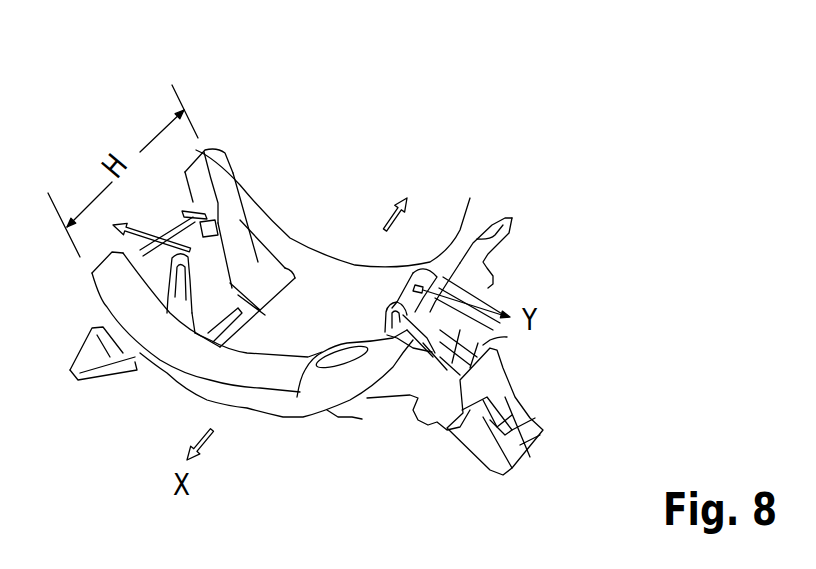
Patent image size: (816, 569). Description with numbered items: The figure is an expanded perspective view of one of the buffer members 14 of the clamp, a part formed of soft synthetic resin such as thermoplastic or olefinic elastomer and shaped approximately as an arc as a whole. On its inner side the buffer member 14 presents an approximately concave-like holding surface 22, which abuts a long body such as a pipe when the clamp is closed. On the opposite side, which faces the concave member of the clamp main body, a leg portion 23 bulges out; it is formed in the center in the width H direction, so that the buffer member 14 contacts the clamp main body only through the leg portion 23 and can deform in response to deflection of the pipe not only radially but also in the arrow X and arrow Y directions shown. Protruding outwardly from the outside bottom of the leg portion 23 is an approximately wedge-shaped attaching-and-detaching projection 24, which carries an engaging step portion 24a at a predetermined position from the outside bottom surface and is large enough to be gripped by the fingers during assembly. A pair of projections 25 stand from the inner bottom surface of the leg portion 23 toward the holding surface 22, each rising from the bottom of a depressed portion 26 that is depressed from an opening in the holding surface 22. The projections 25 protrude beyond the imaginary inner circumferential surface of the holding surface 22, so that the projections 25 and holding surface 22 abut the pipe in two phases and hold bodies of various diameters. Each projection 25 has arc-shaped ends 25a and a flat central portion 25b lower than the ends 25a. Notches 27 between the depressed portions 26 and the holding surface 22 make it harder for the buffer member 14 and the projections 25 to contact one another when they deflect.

The buffer member 14 is at (385, 64).
The holding surface 22 is at (317, 292).
The leg portion 23 is at (368, 402).
The attaching-and-detaching projection 24 is at (72, 380).
The engaging step portion 24a is at (507, 337).
The projection 25 is at (207, 287).
The end of projection 25a is at (218, 225).
The central portion of projection 25b is at (222, 217).
The depressed portion 26 is at (253, 291).
The notch 27 is at (306, 365).